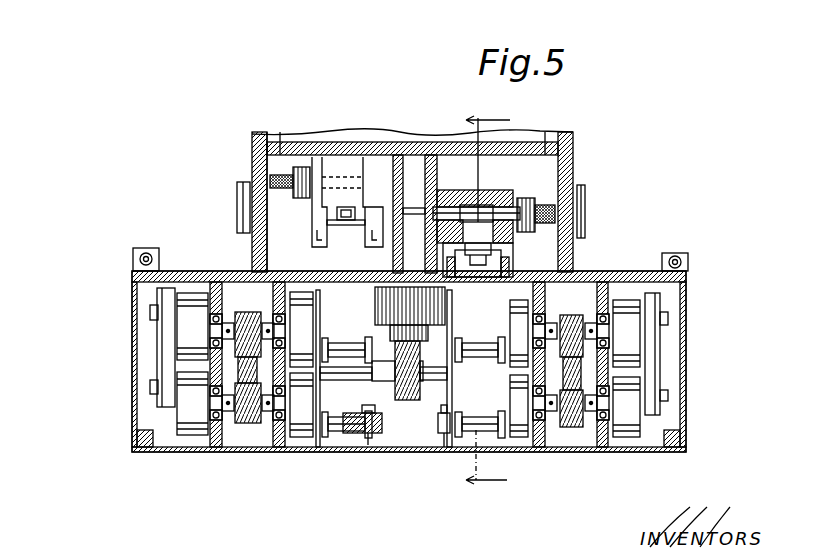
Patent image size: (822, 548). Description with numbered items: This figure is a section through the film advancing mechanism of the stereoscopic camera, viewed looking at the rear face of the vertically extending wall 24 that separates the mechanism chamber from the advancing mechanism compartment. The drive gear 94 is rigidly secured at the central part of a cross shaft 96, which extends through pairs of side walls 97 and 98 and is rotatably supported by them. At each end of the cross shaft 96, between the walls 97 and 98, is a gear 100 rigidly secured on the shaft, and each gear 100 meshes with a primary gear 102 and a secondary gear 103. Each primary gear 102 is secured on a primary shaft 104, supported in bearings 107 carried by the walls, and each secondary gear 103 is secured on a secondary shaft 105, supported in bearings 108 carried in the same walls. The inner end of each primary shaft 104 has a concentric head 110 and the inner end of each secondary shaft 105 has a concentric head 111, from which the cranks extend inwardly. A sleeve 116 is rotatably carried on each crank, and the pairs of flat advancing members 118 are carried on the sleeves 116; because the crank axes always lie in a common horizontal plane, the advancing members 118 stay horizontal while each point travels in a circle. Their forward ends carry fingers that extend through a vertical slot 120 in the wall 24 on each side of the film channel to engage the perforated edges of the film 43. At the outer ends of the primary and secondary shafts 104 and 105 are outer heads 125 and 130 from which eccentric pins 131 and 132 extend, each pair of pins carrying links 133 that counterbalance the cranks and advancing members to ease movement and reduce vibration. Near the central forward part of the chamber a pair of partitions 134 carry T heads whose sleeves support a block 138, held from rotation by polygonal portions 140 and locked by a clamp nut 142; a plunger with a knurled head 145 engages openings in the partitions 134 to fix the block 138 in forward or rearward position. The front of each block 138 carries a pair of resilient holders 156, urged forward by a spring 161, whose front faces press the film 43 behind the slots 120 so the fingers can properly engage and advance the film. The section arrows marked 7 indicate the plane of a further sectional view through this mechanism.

The section line 7- 7 is at (488, 300).
The vertically extending wall 24 is at (237, 271).
The film 43 is at (363, 274).
The gear 94 is at (403, 400).
The cross shaft 96 is at (445, 400).
The side wall 97 is at (278, 447).
The side wall 98 is at (216, 447).
The gear 100 is at (237, 425).
The primary gear 102 is at (572, 320).
The secondary gear 103 is at (563, 432).
The primary shaft 104 is at (590, 325).
The secondary shaft 105 is at (577, 432).
The bearing 107 is at (628, 305).
The bearing 108 is at (609, 408).
The concentric head 110 is at (312, 303).
The concentric head 111 is at (300, 437).
The sleeve 116 is at (340, 347).
The advancing member 118 is at (370, 380).
The vertical slot 120 is at (304, 281).
The outer head 125 is at (178, 290).
The outer head 130 is at (188, 408).
The eccentric pin 131 is at (152, 308).
The eccentric pin 132 is at (155, 388).
The link 133 is at (158, 322).
The partition 134 is at (427, 155).
The block 138 is at (323, 142).
The polygonal portion 140 is at (363, 142).
The clamp nut 142 is at (280, 168).
The knurled head 145 is at (275, 178).
The resilient holder 156 is at (312, 222).
The spring 161 is at (349, 206).